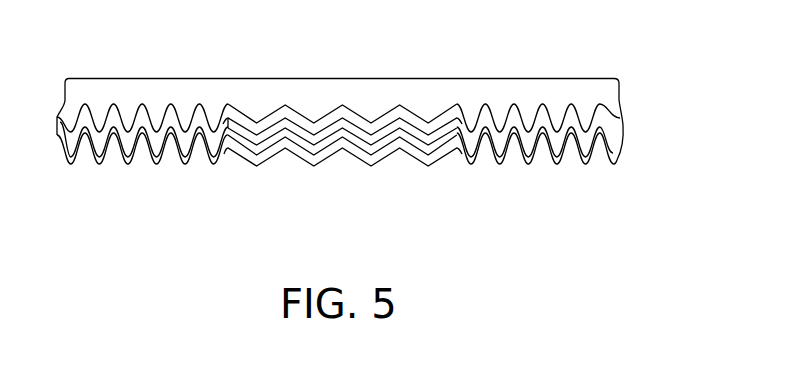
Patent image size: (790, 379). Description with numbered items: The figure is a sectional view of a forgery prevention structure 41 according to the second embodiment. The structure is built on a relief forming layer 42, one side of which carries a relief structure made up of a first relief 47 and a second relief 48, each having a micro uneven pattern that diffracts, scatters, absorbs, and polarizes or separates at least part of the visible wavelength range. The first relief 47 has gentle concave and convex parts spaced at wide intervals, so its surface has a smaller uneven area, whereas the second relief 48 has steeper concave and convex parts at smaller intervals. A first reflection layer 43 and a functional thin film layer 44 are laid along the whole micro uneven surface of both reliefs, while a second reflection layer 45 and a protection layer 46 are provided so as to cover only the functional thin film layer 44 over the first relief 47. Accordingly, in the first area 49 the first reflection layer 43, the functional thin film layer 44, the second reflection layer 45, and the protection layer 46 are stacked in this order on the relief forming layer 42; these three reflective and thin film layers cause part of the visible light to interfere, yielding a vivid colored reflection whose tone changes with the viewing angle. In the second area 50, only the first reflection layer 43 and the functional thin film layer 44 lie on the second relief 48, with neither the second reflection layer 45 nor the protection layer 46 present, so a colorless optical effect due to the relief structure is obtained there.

The forgery prevention structure 41 is at (645, 76).
The relief forming layer 42 is at (578, 97).
The first reflection layer 43 is at (622, 130).
The functional thin film layer 44 is at (614, 166).
The second reflection layer 45 is at (437, 148).
The protection layer 46 is at (353, 157).
The first relief 47 is at (257, 122).
The second relief 48 is at (187, 118).
The first area 49 is at (222, 188).
The second area 50 is at (217, 188).